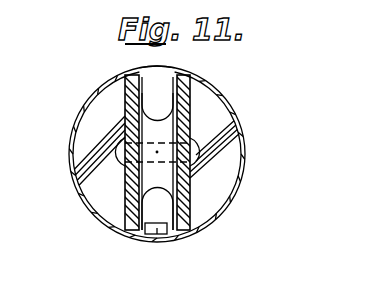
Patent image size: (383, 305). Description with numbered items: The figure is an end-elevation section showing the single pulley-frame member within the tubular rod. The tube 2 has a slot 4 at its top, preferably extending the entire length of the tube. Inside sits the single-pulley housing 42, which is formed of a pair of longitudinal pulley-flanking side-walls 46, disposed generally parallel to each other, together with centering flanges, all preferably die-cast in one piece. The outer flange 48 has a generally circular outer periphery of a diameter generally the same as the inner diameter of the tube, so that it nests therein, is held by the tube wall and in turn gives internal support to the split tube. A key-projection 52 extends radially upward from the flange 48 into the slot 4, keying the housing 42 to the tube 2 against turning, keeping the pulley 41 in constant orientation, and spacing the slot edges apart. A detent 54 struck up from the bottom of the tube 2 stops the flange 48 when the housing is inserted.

The tube 2 is at (243, 137).
The slot 4 is at (167, 66).
The pulley 41 is at (160, 108).
The single-pulley housing 42 is at (190, 206).
The pulley-flanking side-walls 46 is at (125, 88).
The outer flange 48 is at (225, 172).
The key-projection 52 is at (150, 62).
The detent 54 is at (158, 235).